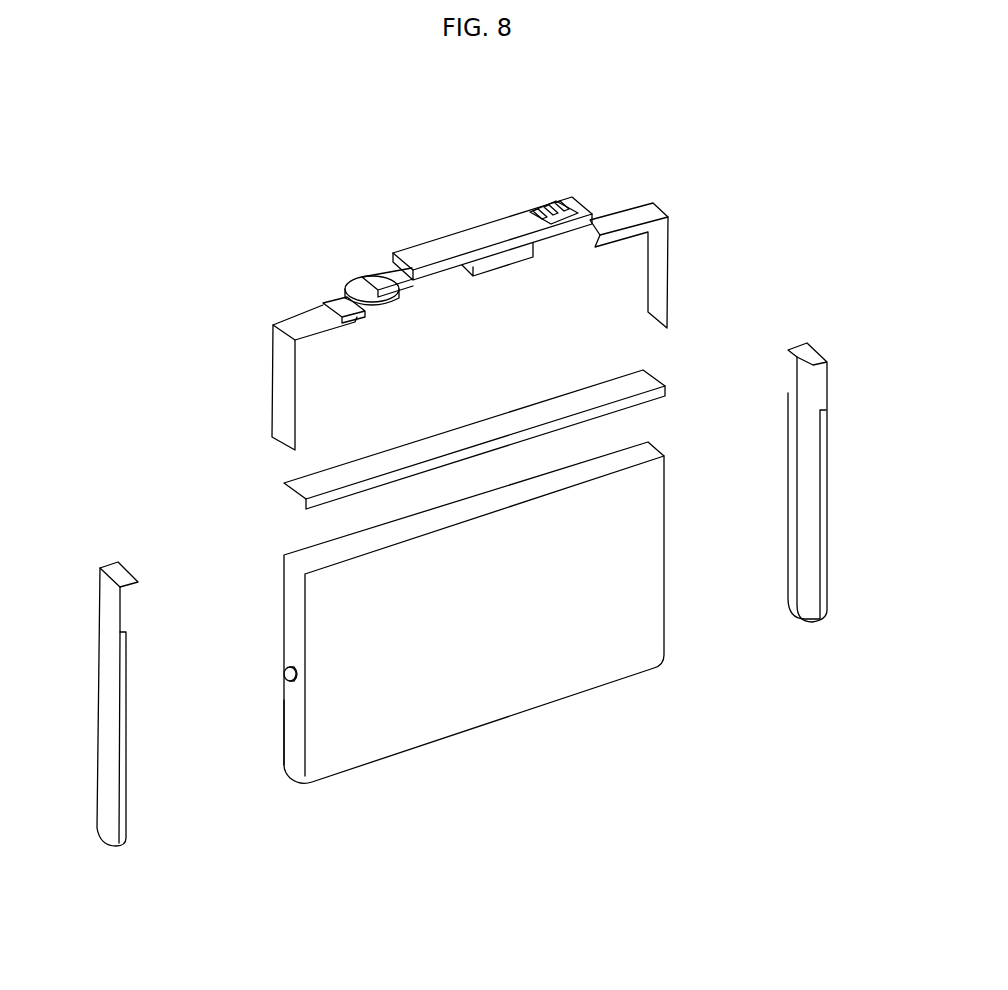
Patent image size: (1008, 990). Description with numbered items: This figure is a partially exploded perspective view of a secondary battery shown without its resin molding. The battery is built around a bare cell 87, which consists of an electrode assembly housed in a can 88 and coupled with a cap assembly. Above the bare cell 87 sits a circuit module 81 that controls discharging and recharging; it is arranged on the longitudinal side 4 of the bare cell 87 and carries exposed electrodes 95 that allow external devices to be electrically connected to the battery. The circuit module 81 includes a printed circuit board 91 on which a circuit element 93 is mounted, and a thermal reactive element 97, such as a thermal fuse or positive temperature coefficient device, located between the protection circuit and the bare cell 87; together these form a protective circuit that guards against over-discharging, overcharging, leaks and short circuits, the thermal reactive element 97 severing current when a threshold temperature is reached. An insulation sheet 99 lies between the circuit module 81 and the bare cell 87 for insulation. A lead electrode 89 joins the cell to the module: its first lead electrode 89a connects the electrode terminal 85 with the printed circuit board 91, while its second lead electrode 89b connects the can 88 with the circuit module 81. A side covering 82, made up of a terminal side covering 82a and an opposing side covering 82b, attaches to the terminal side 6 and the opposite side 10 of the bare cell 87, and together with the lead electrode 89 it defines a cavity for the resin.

The longitudinal side 4 is at (652, 453).
The terminal side 6 is at (292, 750).
The opposite side 10 is at (664, 592).
The circuit module 81 is at (483, 215).
The side covering 82 is at (797, 707).
The terminal side covering 82a is at (120, 817).
The opposing side covering 82b is at (808, 602).
The electrode terminal 85 is at (284, 674).
The bare cell 87 is at (493, 733).
The can 88 is at (573, 688).
The lead electrode 89 is at (562, 78).
The first lead electrode 89a is at (308, 323).
The second lead electrode 89b is at (640, 217).
The printed circuit board 91 is at (432, 252).
The circuit element 93 is at (505, 260).
The exposed electrodes 95 is at (548, 202).
The thermal reactive element 97 is at (362, 279).
The insulation sheet 99 is at (307, 490).